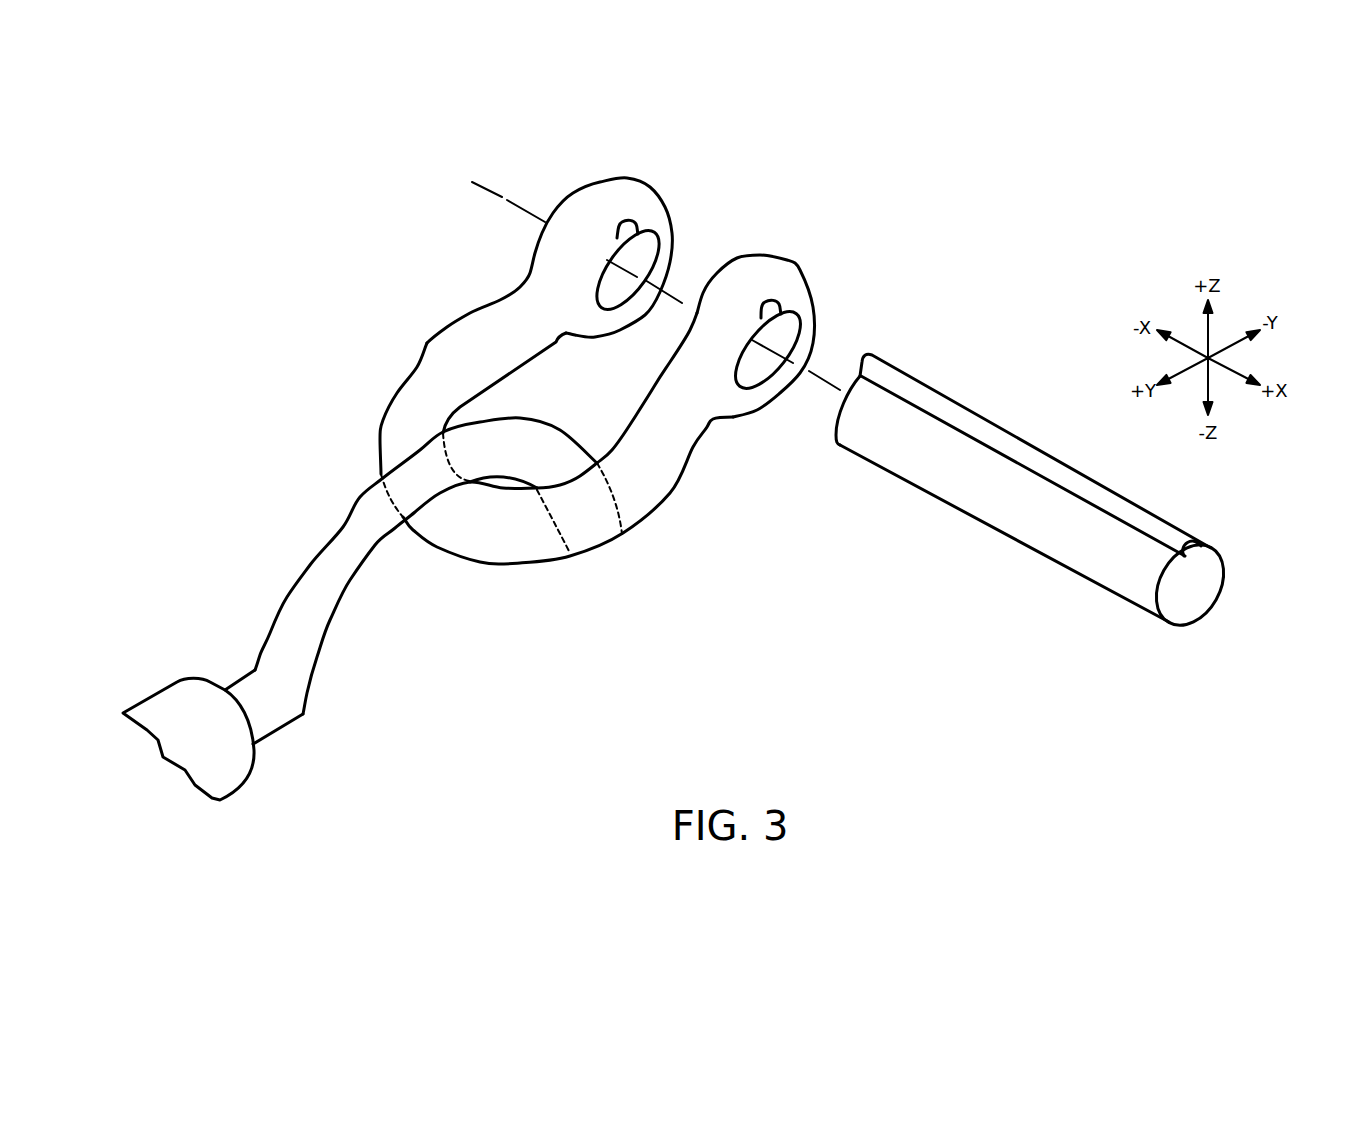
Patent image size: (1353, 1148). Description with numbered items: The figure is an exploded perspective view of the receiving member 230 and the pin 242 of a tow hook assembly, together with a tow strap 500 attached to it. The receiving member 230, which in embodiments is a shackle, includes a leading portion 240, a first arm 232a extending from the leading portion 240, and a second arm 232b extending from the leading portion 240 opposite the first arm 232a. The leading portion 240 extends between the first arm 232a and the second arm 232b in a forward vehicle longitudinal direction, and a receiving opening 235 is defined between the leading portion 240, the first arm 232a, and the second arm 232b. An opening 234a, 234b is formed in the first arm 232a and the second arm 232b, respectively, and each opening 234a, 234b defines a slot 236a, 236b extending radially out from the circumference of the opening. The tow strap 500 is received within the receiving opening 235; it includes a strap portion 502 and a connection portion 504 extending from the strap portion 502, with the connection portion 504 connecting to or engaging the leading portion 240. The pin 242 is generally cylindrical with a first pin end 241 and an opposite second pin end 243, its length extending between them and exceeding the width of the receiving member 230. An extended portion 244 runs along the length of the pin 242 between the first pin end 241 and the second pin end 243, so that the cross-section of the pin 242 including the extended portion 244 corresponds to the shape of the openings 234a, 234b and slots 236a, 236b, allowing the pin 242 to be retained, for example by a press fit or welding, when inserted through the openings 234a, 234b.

The receiving member 230 is at (637, 382).
The first arm 232a is at (728, 357).
The second arm 232b is at (601, 246).
The opening 234a is at (790, 343).
The opening 234b is at (652, 256).
The receiving opening 235 is at (455, 407).
The slot 236a is at (780, 308).
The slot 236b is at (637, 229).
The leading portion 240 is at (493, 563).
The first pin end 241 is at (1196, 594).
The pin 242 is at (1015, 507).
The second pin end 243 is at (838, 420).
The extended portion 244 is at (1172, 533).
The tow strap 500 is at (360, 634).
The strap portion 502 is at (228, 798).
The connection portion 504 is at (308, 697).